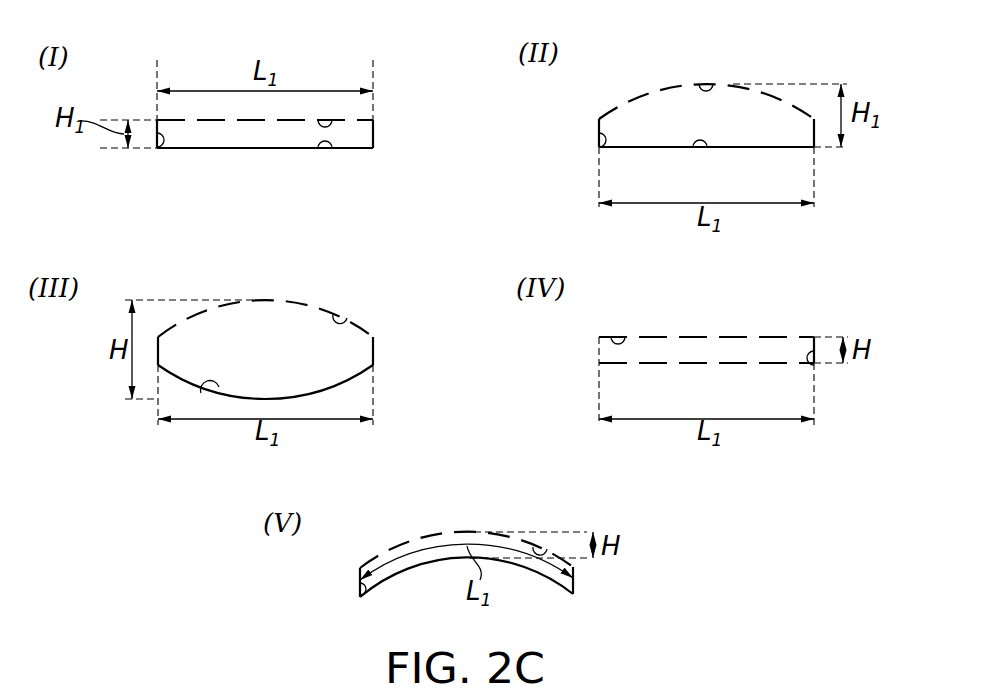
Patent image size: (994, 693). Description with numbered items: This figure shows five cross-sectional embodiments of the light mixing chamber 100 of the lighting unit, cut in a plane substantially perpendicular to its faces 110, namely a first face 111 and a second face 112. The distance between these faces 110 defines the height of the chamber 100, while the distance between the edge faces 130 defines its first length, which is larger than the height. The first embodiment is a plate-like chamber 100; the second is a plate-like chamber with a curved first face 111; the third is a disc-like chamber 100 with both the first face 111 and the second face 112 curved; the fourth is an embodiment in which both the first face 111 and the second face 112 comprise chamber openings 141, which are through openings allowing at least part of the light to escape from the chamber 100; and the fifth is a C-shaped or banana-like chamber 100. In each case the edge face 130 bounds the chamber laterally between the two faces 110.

The light mixing chamber 100 is at (358, 138).
The faces 110 is at (434, 286).
The first face 111 is at (335, 120).
The second face 112 is at (332, 148).
The edge face 130 is at (160, 150).
The chamber openings 141 is at (224, 128).